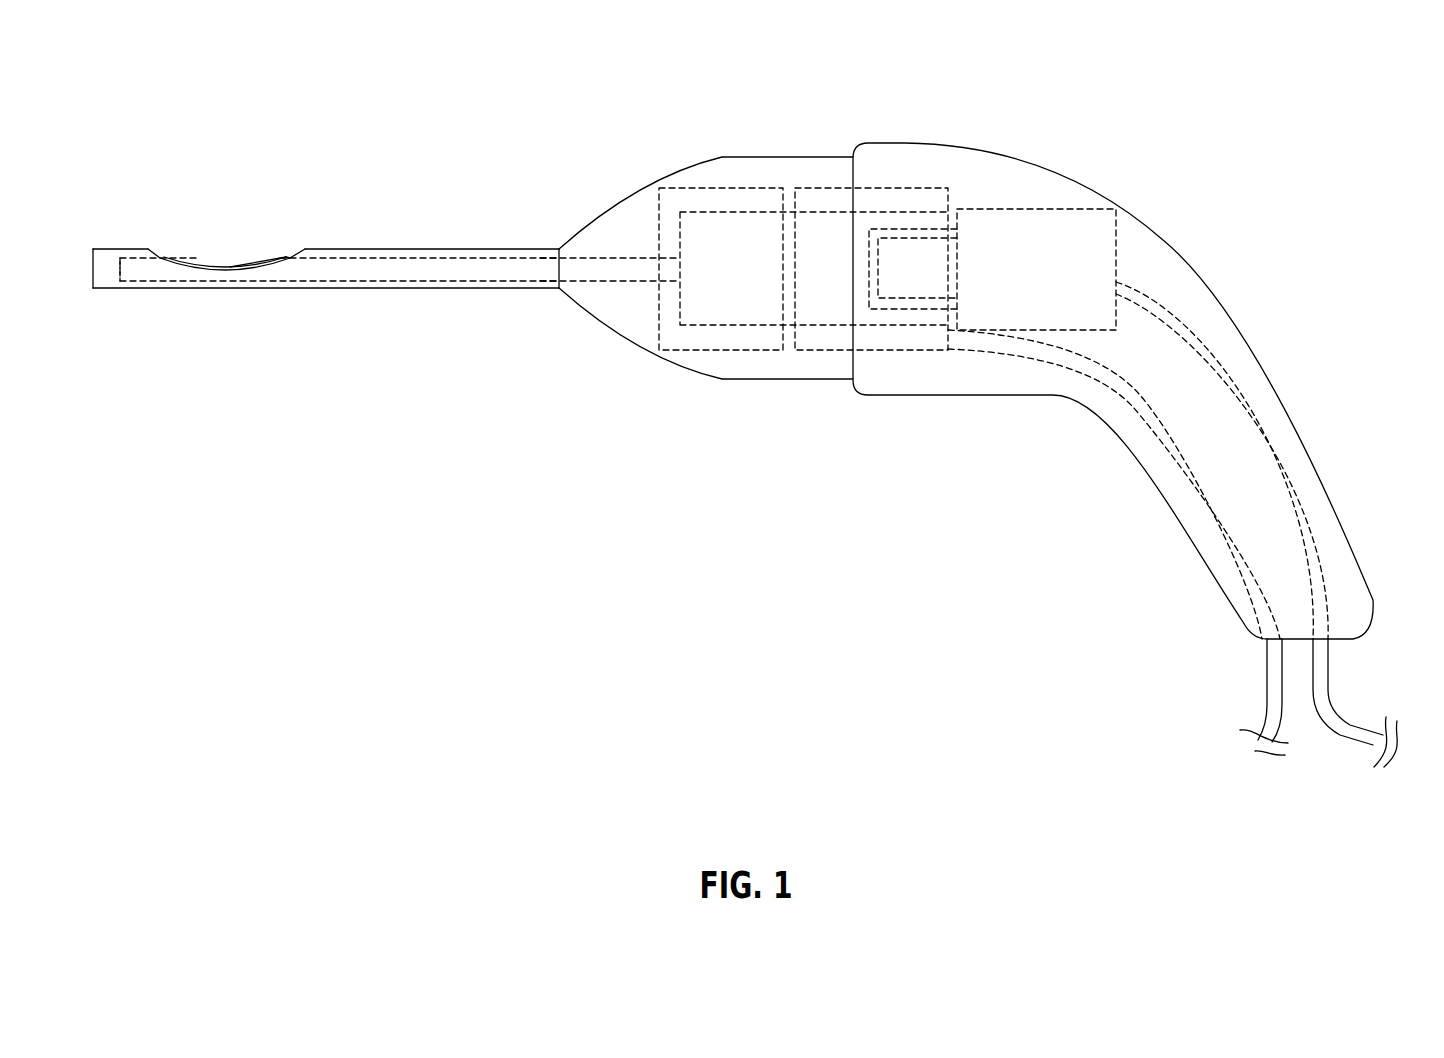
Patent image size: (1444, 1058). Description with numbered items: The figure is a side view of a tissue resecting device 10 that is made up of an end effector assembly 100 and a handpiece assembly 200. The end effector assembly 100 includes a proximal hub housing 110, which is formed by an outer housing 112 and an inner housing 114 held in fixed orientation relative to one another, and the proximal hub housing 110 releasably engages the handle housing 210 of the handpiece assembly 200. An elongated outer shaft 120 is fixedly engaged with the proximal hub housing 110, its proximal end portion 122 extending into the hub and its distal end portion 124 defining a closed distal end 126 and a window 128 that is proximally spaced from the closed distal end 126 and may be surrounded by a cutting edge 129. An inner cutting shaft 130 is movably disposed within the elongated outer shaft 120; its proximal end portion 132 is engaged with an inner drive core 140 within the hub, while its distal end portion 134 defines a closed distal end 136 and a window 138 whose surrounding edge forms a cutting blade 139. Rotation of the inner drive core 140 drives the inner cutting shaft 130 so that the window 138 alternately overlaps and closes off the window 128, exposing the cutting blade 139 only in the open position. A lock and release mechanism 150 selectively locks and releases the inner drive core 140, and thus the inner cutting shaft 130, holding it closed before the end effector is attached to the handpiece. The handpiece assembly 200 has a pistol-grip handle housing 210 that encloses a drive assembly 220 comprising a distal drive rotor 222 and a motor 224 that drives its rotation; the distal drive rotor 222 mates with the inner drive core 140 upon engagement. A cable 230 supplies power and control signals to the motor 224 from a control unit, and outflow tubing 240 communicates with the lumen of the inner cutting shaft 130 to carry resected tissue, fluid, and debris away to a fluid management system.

The tissue resecting device 10 is at (596, 118).
The end effector assembly 100 is at (93, 455).
The proximal hub housing 110 is at (810, 138).
The outer housing 112 is at (704, 157).
The inner housing 114 is at (687, 350).
The elongated outer shaft 120 is at (394, 249).
The proximal end portion 122 is at (557, 248).
The distal end portion 124 is at (112, 288).
The closed distal end 126 is at (92, 272).
The window 128 is at (172, 262).
The cutting edge 129 is at (220, 270).
The inner cutting shaft 130 is at (440, 289).
The proximal end portion 132 is at (542, 289).
The distal end portion 134 is at (165, 282).
The closed distal end 136 is at (118, 272).
The window 138 is at (247, 263).
The cutting blade 139 is at (267, 268).
The inner drive core 140 is at (758, 287).
The lock and release mechanism 150 is at (822, 287).
The handpiece assembly 200 is at (865, 130).
The handle housing 210 is at (1222, 288).
The drive assembly 220 is at (1058, 209).
The distal drive rotor 222 is at (923, 285).
The motor 224 is at (1016, 283).
The cable 230 is at (1333, 679).
The outflow tubing 240 is at (1266, 677).